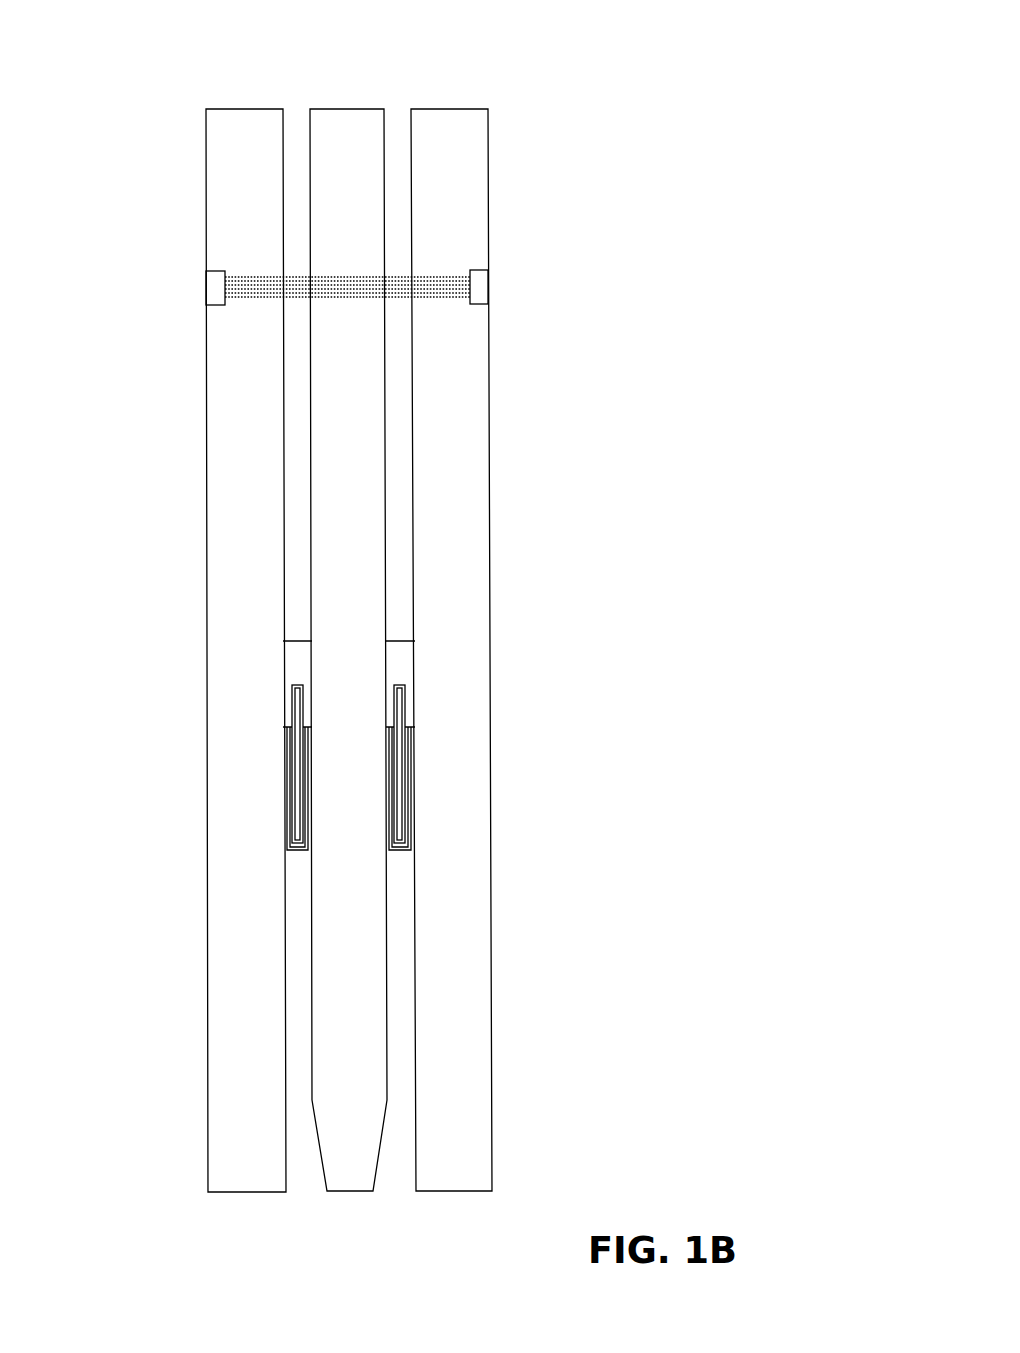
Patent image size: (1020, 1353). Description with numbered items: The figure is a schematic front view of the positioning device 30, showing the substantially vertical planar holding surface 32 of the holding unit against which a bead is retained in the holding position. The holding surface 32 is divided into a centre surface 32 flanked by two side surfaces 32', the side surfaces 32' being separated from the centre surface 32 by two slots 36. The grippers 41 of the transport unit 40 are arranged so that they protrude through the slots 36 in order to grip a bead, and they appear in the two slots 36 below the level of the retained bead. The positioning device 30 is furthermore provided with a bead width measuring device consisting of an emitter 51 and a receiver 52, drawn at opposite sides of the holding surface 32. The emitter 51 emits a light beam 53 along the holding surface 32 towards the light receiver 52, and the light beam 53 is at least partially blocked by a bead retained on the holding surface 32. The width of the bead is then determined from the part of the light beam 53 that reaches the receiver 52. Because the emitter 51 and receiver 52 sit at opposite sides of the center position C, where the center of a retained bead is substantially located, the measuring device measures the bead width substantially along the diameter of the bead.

The positioning device 30 is at (536, 419).
The holding surface 32 is at (348, 650).
The side surfaces 32' is at (325, 650).
The slots 36 is at (402, 118).
The transport unit 40 is at (303, 655).
The grippers 41 is at (299, 795).
The emitter 51 is at (210, 289).
The receiver 52 is at (486, 290).
The light beam 53 is at (442, 283).
The center position C is at (344, 288).